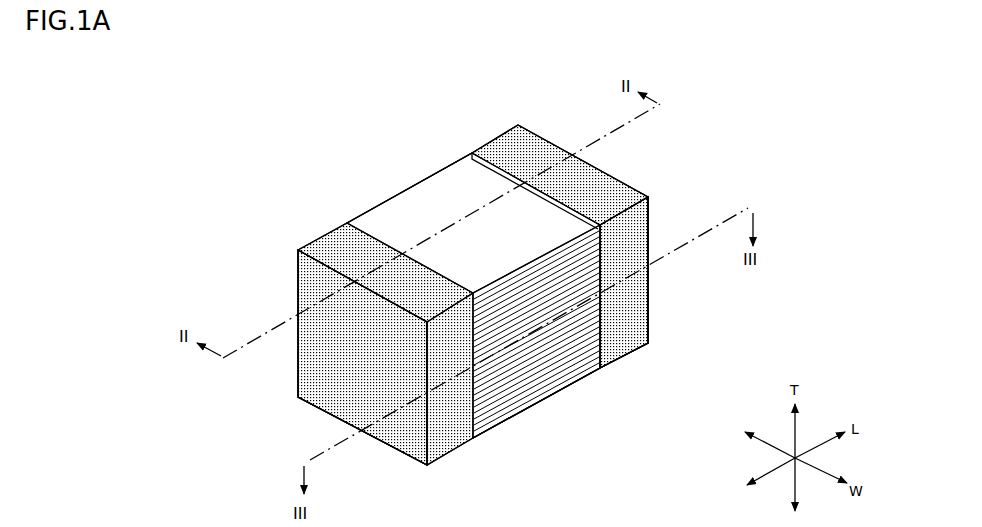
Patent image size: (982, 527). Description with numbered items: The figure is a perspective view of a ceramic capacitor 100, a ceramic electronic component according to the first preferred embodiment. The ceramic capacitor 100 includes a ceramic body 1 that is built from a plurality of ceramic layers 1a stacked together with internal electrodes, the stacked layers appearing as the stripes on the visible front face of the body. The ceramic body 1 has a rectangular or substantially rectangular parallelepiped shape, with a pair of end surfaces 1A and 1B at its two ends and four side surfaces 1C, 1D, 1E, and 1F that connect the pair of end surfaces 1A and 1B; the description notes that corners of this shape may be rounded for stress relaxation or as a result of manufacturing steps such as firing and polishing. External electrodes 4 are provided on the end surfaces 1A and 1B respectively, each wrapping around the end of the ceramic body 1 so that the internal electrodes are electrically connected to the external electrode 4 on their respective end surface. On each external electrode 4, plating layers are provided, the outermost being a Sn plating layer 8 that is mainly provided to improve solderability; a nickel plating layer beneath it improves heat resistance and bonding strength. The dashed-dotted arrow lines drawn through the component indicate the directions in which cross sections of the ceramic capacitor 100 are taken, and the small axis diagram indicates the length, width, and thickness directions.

The ceramic capacitor 100 is at (213, 117).
The ceramic body 1 is at (494, 289).
The end surface 1A is at (358, 356).
The end surface 1B is at (622, 157).
The side surface 1C is at (456, 206).
The side surface 1D is at (368, 206).
The side surface 1E is at (521, 417).
The side surface 1F is at (543, 344).
The ceramic layer 1a is at (586, 373).
The external electrode 4 is at (312, 238).
The Sn plating layer 8 is at (410, 432).